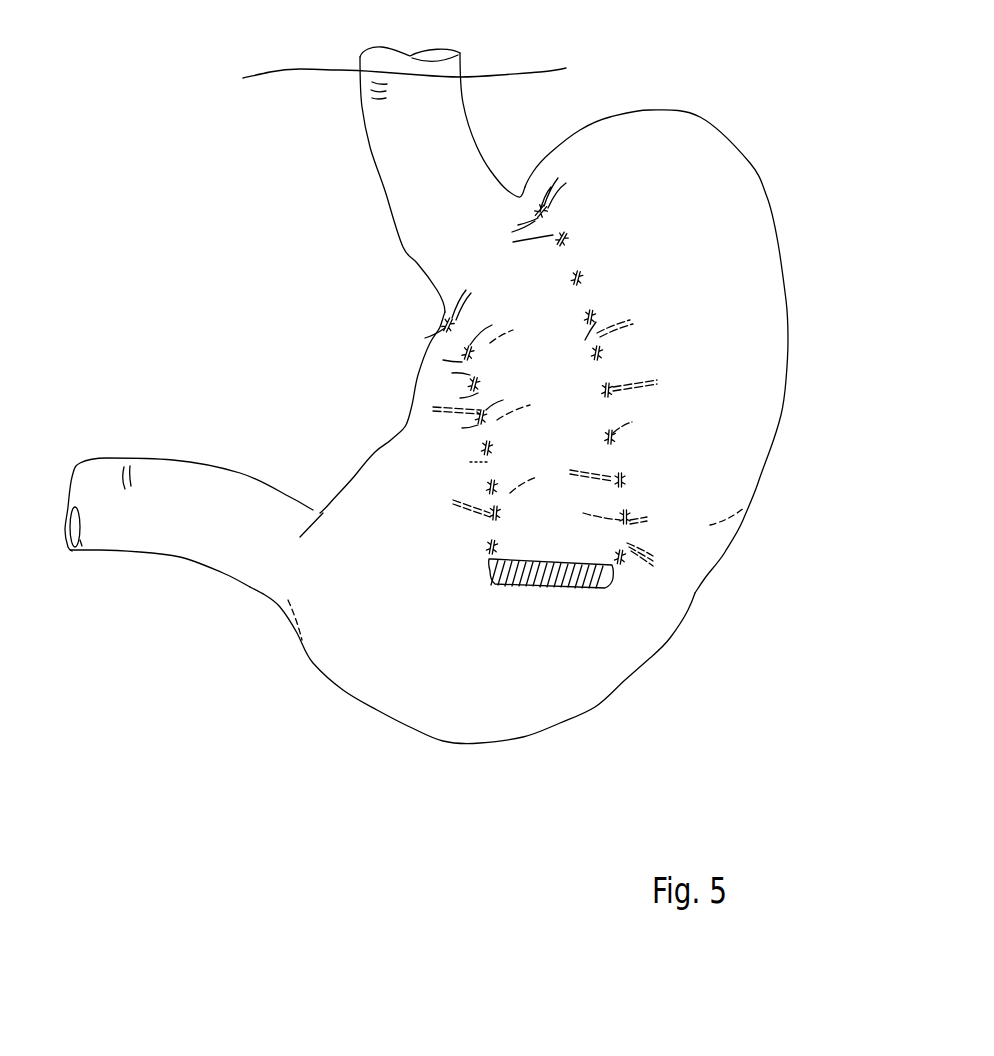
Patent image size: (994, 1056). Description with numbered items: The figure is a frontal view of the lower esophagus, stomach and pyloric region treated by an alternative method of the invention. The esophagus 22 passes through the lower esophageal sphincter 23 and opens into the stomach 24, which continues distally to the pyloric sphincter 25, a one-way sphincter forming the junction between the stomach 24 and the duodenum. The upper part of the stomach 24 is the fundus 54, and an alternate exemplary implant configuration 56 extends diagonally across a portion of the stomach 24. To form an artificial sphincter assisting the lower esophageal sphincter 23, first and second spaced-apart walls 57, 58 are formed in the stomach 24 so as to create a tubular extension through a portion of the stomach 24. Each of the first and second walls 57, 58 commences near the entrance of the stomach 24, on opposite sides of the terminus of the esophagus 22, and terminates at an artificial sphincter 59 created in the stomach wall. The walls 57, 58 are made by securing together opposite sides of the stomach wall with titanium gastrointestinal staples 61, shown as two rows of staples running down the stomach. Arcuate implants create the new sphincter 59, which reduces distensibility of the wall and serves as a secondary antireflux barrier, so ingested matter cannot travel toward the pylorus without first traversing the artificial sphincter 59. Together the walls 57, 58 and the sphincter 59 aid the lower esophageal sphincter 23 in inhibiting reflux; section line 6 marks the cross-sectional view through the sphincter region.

The esophagus 22 is at (366, 135).
The lower esophageal sphincter 23 is at (410, 257).
The stomach 24 is at (756, 279).
The pyloric sphincter 25 is at (195, 460).
The fundus 54 is at (699, 118).
The alternate exemplary implant configuration 56 is at (632, 683).
The first wall 57 is at (627, 482).
The second wall 58 is at (482, 484).
The artificial sphincter 59 is at (590, 589).
The gastrointestinal staples 61 is at (443, 320).
The section line 6- 6 is at (782, 571).